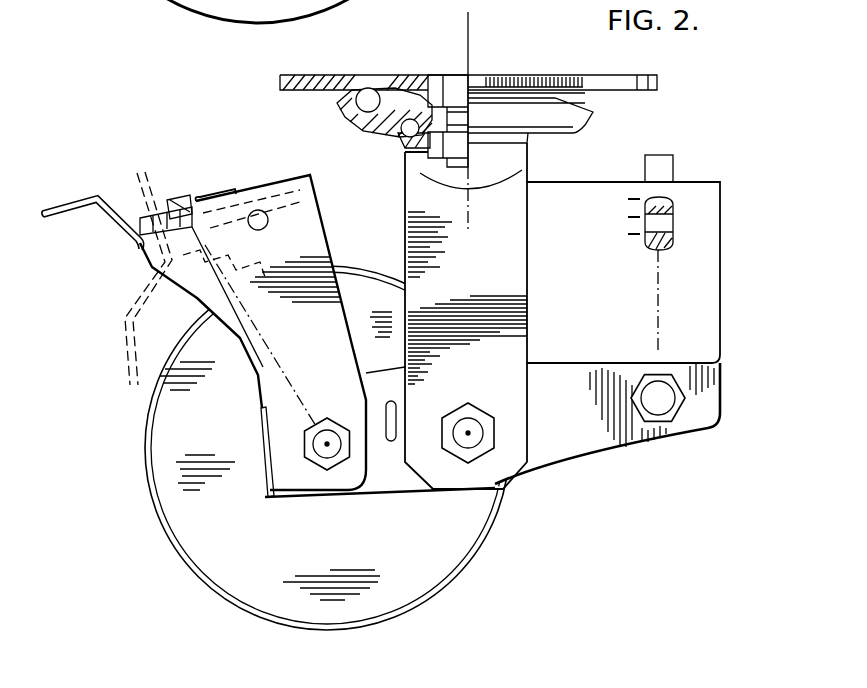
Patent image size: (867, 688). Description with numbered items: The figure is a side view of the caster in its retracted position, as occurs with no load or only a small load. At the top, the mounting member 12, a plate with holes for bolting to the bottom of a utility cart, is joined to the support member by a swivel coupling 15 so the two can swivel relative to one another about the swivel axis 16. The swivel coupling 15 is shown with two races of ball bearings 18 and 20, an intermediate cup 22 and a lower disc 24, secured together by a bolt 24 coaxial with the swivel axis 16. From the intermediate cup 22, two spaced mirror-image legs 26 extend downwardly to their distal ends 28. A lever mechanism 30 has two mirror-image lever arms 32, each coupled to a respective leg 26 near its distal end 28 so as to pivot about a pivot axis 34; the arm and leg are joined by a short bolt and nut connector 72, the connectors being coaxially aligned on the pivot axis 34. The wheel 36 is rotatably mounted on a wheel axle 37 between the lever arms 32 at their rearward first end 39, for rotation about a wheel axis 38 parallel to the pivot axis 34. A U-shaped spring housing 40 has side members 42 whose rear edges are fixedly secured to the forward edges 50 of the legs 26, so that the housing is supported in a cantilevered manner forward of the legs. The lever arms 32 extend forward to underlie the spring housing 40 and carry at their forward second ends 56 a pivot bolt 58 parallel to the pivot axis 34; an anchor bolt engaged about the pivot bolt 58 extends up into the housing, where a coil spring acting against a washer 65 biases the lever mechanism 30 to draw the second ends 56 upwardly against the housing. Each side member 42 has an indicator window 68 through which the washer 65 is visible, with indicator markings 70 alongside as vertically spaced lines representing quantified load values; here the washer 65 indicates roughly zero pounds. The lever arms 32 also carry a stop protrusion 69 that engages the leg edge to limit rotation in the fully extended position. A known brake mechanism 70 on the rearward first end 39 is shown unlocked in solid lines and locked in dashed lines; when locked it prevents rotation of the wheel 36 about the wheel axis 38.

The mounting member 12 is at (292, 84).
The swivel coupling 15 is at (312, 104).
The swivel axis 16 is at (470, 34).
The ball bearings 18 is at (369, 95).
The ball bearings 20 is at (403, 132).
The intermediate cup 22 is at (350, 112).
The lower disc / bolt 24 is at (455, 80).
The legs 26 is at (481, 284).
The distal ends 28 is at (495, 470).
The lever mechanism 30 is at (580, 472).
The lever arms 32 is at (595, 422).
The pivot axis 34 is at (470, 430).
The wheel 36 is at (172, 489).
The wheel axle 37 is at (327, 470).
The wheel axis 38 is at (323, 447).
The rearward first end 39 is at (258, 427).
The spring housing 40 is at (730, 184).
The side members 42 is at (606, 331).
The forward edges 50 is at (517, 208).
The forward second ends 56 is at (710, 393).
The pivot bolt 58 is at (665, 402).
The washer 65 is at (675, 196).
The indicator window 68 is at (675, 212).
The stop protrusion 69 is at (392, 444).
The indicator markings / brake mechanism 70 is at (114, 185).
The bolt and nut connectors 72 is at (470, 467).